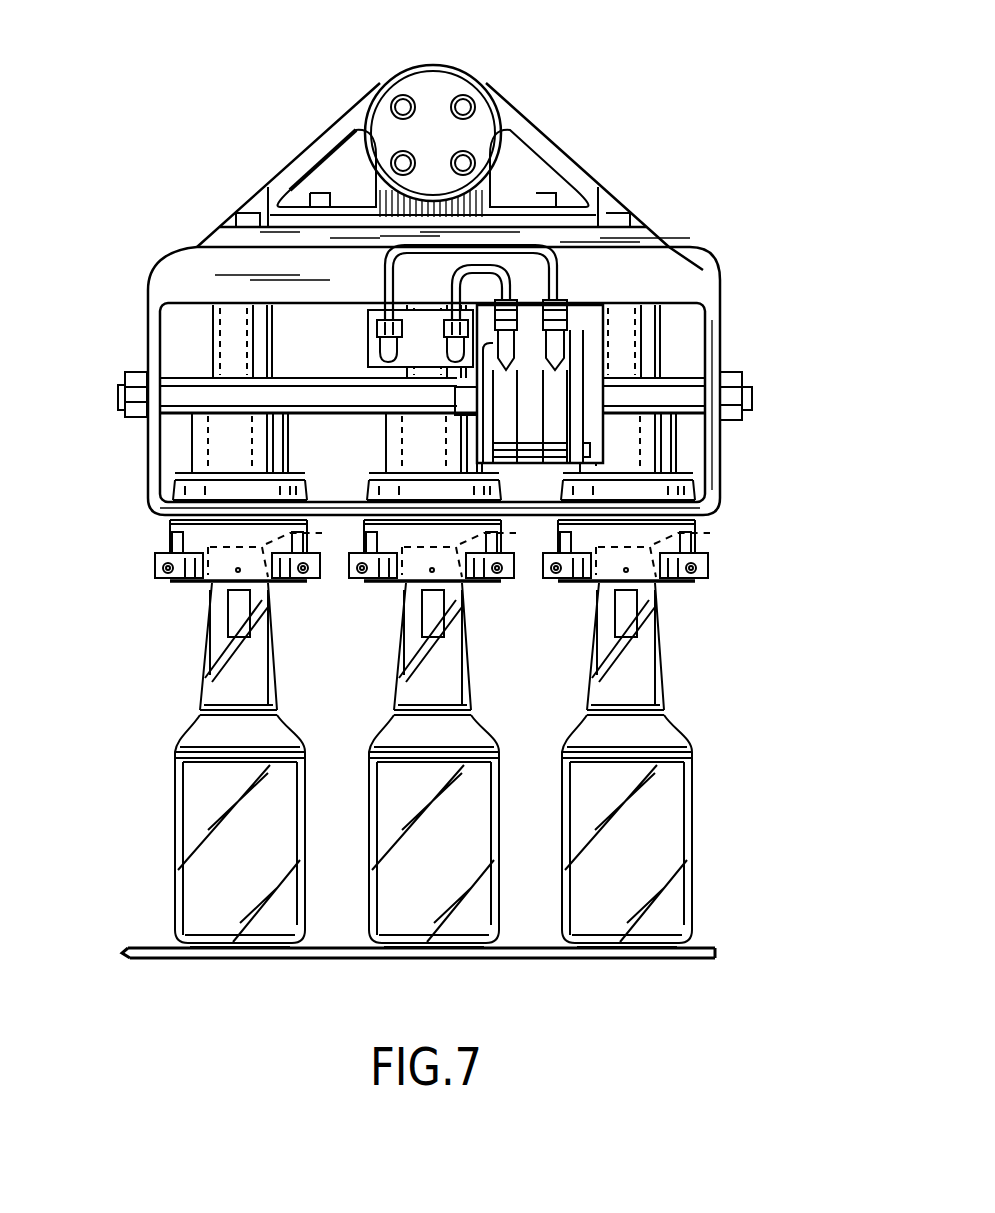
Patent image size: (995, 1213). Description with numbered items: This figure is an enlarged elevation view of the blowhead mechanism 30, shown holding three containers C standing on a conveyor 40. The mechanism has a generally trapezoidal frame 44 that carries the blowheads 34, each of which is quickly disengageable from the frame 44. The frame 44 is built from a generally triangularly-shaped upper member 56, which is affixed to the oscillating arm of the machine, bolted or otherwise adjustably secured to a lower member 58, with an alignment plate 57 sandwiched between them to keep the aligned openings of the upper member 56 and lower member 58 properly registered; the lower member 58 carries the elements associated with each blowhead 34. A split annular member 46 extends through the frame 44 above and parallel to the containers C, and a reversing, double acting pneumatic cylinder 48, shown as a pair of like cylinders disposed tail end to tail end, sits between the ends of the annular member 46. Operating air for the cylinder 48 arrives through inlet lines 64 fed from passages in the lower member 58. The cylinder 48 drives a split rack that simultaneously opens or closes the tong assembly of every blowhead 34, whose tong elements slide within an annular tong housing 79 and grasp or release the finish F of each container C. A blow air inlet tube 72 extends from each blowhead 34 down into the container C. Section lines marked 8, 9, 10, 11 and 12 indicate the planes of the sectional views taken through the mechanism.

The blowhead mechanism 30 is at (690, 277).
The blowhead 34 is at (183, 581).
The conveyor 40 is at (683, 951).
The frame 44 is at (178, 248).
The split annular member 46 is at (322, 378).
The reversing, double acting pneumatic cylinder 48 is at (512, 466).
The upper member 56 is at (585, 178).
The alignment plate 57 is at (647, 237).
The lower member 58 is at (712, 458).
The inlet lines 64 is at (452, 292).
The blow air inlet tube 72 is at (258, 601).
The annular tong housing 79 is at (168, 533).
The finish F is at (727, 550).
The container C is at (306, 848).
The section line 8- 8 is at (118, 400).
The section line 9- 9 is at (122, 462).
The section line 10- 10 is at (160, 582).
The section line 11- 11 is at (403, 33).
The section line 12- 12 is at (93, 250).